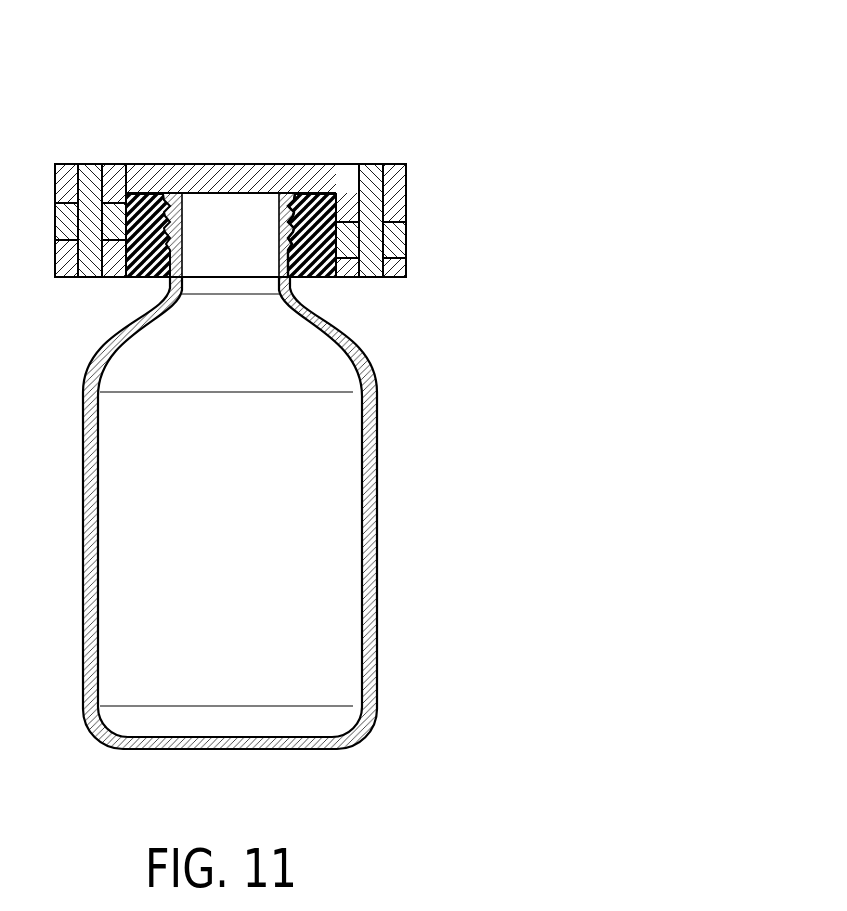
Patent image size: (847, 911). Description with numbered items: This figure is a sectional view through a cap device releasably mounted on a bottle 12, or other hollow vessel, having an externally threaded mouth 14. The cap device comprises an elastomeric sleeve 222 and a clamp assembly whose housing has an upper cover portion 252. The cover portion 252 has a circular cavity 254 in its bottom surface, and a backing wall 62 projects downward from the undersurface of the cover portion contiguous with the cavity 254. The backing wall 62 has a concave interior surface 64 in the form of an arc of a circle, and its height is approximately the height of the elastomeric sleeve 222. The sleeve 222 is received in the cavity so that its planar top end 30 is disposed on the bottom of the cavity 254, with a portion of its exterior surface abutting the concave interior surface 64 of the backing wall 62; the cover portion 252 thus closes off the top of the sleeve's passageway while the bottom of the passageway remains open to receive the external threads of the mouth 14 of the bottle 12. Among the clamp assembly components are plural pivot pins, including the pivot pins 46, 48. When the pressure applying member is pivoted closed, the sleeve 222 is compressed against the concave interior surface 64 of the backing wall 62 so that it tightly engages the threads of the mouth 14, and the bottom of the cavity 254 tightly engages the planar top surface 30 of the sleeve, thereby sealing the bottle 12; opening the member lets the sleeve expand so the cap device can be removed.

The bottle 12 is at (377, 525).
The externally threaded mouth 14 is at (293, 222).
The planar top end 30 is at (145, 165).
The pivot pin 46 is at (95, 180).
The pivot pin 48 is at (372, 168).
The backing wall 62 is at (360, 213).
The concave interior surface 64 is at (338, 208).
The elastomeric sleeve 222 is at (321, 193).
The upper cover portion 252 is at (270, 165).
The circular cavity 254 is at (242, 165).